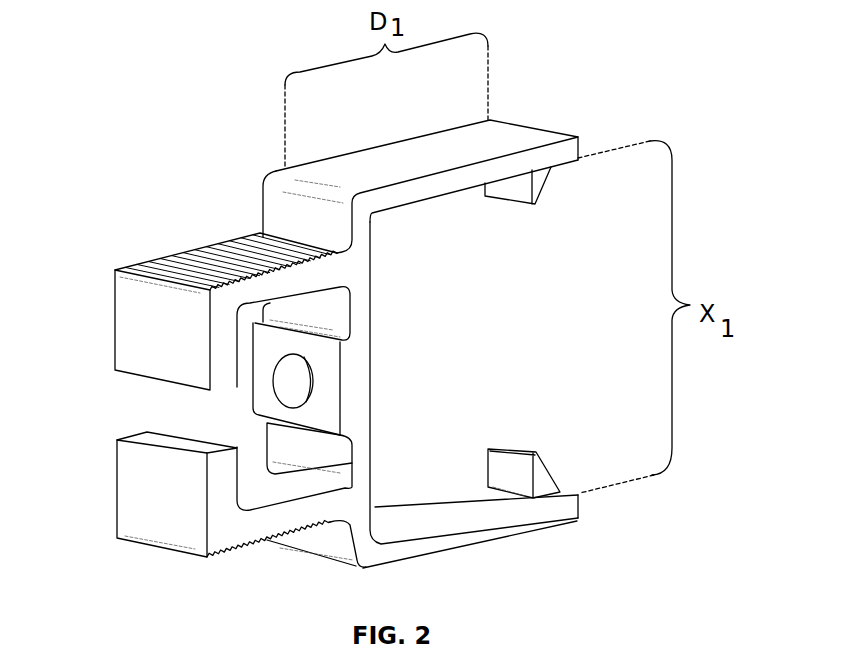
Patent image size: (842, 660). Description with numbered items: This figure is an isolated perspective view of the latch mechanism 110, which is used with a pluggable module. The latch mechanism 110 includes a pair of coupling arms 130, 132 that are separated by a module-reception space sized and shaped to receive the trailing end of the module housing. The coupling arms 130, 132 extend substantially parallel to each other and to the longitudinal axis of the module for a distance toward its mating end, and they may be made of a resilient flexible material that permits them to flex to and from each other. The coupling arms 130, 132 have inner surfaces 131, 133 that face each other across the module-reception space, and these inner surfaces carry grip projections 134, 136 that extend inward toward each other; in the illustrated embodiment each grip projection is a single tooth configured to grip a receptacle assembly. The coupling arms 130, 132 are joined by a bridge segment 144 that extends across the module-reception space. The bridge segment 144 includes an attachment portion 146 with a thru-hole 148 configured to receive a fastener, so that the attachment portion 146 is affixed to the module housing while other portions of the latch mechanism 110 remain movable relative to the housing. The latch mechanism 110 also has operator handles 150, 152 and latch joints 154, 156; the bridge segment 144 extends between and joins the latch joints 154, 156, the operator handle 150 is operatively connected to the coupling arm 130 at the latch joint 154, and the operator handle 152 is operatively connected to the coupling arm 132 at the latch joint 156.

The latch mechanism 110 is at (140, 86).
The coupling arm 130 is at (472, 122).
The inner surface 131 is at (455, 201).
The coupling arm 132 is at (475, 543).
The inner surface 133 is at (413, 504).
The grip projection 134 is at (516, 190).
The grip projection 136 is at (546, 470).
The bridge segment 144 is at (397, 292).
The attachment portion 146 is at (389, 379).
The thru-hole 148 is at (302, 371).
The operator handle 150 is at (168, 253).
The operator handle 152 is at (178, 552).
The latch joint 154 is at (247, 205).
The latch joint 156 is at (325, 531).